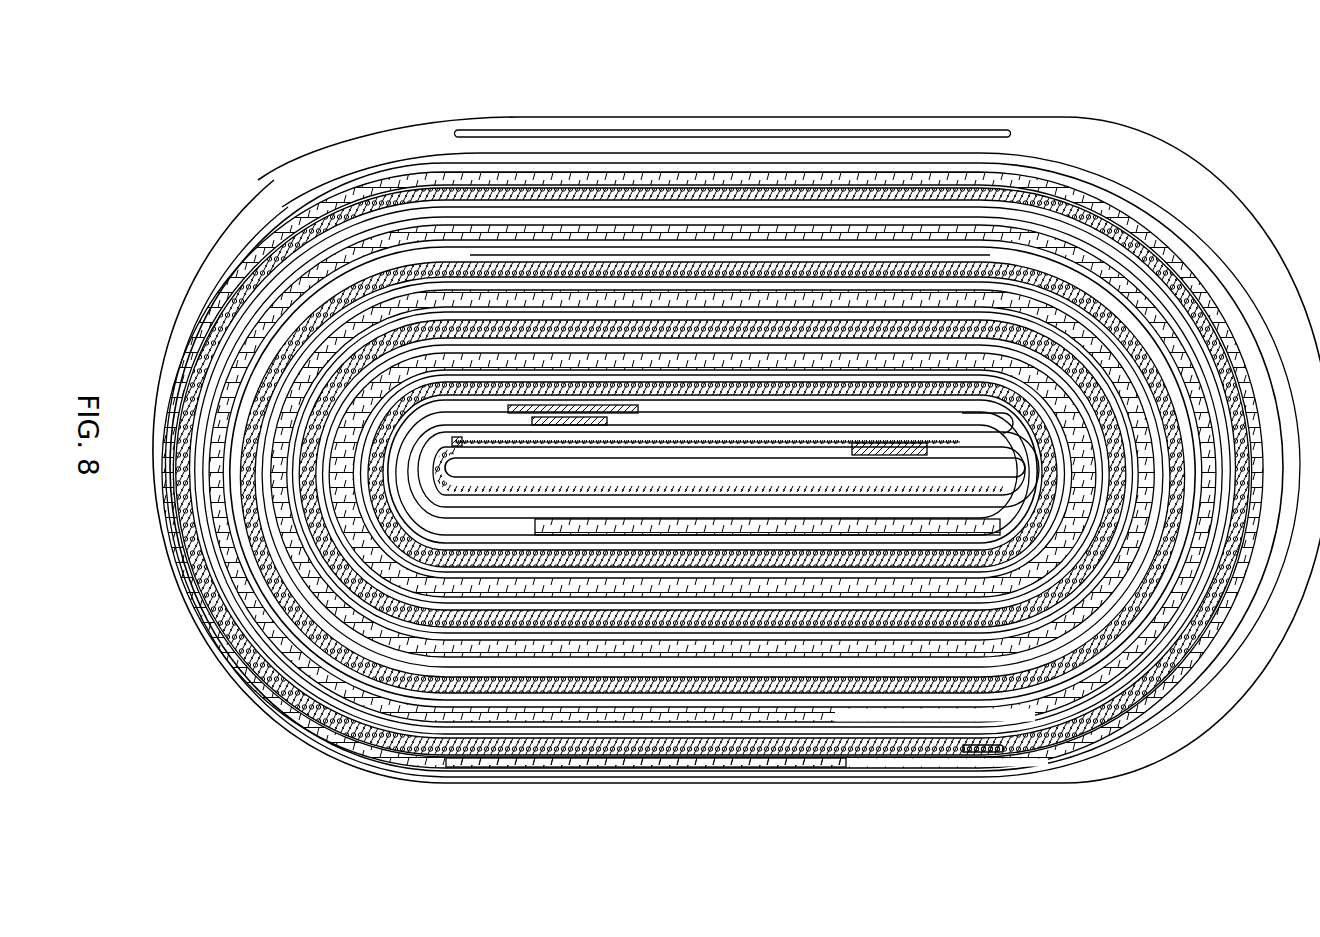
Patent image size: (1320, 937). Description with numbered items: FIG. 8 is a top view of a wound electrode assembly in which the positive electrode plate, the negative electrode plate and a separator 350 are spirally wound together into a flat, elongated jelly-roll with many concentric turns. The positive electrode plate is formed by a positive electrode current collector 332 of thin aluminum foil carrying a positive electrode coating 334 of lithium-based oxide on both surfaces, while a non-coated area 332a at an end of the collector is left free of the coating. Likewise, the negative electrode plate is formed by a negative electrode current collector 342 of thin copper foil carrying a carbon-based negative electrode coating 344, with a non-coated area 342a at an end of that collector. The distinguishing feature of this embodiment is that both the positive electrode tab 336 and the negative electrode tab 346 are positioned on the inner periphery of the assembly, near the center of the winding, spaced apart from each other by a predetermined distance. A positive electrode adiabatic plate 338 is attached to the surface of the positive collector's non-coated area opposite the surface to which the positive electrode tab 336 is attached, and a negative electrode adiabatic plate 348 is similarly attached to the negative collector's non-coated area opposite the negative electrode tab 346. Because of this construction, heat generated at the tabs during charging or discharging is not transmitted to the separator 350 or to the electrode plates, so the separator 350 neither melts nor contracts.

The positive electrode current collector 332 is at (1100, 190).
The non-coated area of positive electrode collector 332a is at (1004, 130).
The positive electrode coating 334 is at (1143, 223).
The positive electrode tab 336 is at (607, 423).
The positive electrode adiabatic plate 338 is at (627, 405).
The negative electrode current collector 342 is at (930, 755).
The non-coated area of negative electrode collector 342a is at (987, 755).
The negative electrode coating 344 is at (742, 755).
The negative electrode tab 346 is at (852, 448).
The negative electrode adiabatic plate 348 is at (868, 433).
The separator 350 is at (1068, 121).